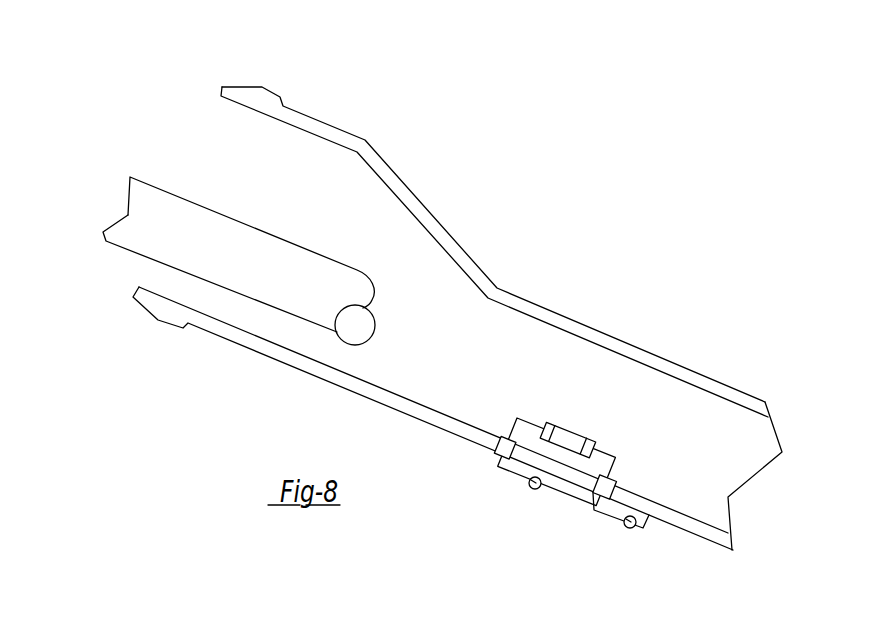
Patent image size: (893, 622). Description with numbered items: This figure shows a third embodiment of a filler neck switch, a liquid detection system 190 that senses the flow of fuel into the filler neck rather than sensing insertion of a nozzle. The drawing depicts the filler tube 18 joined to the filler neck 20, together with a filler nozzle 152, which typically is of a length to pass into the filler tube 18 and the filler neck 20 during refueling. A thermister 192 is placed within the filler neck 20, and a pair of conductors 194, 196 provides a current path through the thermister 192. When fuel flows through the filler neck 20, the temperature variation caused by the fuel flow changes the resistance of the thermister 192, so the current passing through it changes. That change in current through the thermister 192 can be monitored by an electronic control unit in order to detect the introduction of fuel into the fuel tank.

The filler tube 18 is at (288, 117).
The filler neck 20 is at (574, 322).
The filler nozzle 152 is at (136, 222).
The liquid detection system 190 is at (550, 193).
The thermister 192 is at (567, 438).
The conductor 194 is at (540, 490).
The conductor 196 is at (630, 528).